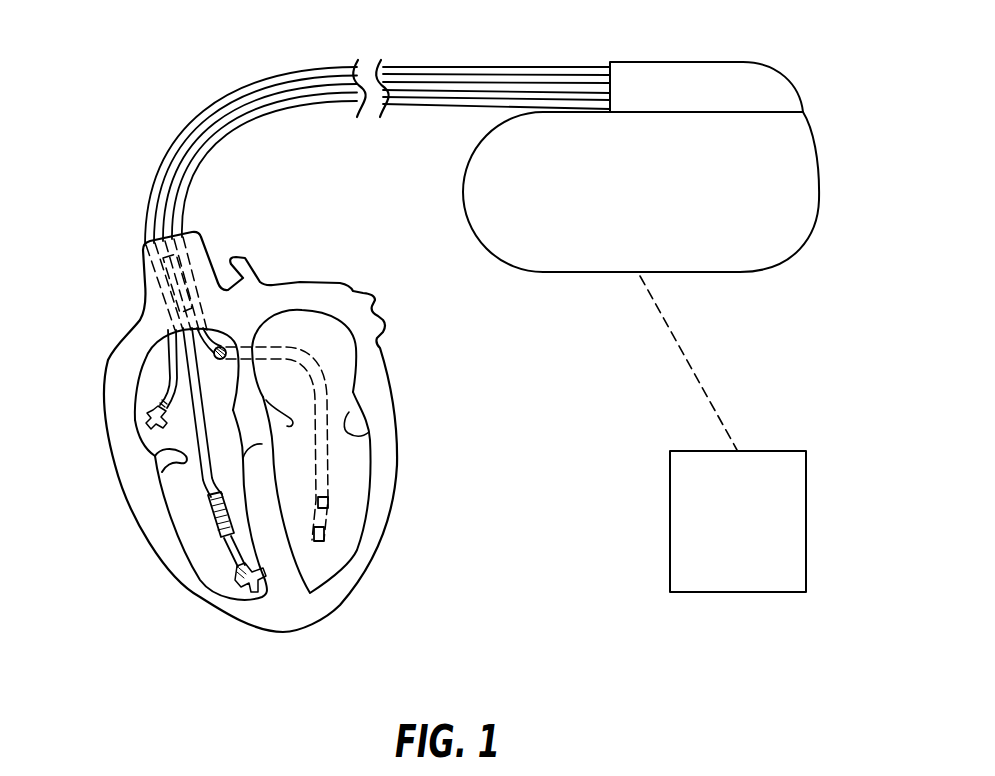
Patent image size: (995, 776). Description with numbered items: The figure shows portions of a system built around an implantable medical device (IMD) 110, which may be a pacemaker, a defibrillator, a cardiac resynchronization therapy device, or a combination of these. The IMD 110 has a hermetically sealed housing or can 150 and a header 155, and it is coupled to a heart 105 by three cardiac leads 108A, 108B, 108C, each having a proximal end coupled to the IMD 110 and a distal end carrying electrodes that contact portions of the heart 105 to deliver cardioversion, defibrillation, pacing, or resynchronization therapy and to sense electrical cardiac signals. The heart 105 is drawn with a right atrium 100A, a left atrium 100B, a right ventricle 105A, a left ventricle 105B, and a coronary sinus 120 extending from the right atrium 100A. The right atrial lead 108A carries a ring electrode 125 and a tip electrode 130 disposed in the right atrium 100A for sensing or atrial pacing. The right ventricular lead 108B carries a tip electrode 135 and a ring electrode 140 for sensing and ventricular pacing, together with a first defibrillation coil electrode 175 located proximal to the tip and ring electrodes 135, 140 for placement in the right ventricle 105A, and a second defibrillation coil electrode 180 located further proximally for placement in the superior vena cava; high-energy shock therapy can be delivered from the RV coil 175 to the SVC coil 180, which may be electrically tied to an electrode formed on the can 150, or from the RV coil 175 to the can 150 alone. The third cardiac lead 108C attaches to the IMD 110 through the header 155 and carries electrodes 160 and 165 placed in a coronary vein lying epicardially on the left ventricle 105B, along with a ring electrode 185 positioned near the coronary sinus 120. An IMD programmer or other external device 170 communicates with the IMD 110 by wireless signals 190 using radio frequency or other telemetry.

The right atrium 100A is at (178, 430).
The left atrium 100B is at (315, 325).
The heart 105 is at (393, 418).
The right ventricle 105A is at (183, 482).
The left ventricle 105B is at (323, 560).
The right atrial lead 108A is at (287, 75).
The right ventricular lead 108B is at (230, 110).
The third cardiac lead 108C is at (250, 132).
The implantable medical device 110 is at (711, 42).
The coronary sinus 120 is at (217, 362).
The ring electrode 125 is at (166, 398).
The tip electrode 130 is at (145, 428).
The tip electrode 135 is at (252, 592).
The ring electrode 140 is at (237, 565).
The IMD housing or can 150 is at (821, 173).
The header 155 is at (785, 72).
The electrode 160 is at (330, 503).
The electrode 165 is at (327, 528).
The external device 170 is at (740, 594).
The first defibrillation coil electrode 175 is at (222, 537).
The second defibrillation coil electrode 180 is at (167, 287).
The ring electrode 185 is at (224, 343).
The wireless signals 190 is at (703, 360).